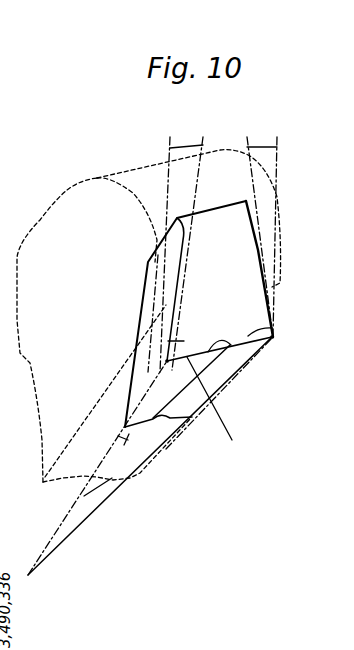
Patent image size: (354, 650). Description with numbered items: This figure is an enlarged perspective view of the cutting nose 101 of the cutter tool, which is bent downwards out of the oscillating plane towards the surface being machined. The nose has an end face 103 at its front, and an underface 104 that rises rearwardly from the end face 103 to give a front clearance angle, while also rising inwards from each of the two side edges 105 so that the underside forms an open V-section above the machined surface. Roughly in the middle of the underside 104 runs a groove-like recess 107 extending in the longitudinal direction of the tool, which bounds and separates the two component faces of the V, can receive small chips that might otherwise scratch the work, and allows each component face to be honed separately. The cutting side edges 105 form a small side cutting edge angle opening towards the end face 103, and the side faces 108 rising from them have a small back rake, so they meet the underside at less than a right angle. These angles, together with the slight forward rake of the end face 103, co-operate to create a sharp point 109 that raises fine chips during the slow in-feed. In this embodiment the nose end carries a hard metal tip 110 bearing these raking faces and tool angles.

The cutting nose 101 is at (117, 157).
The end face 103 is at (238, 277).
The underface 104 is at (203, 412).
The side edges 105 is at (143, 396).
The recess 107 is at (218, 336).
The side faces 108 is at (148, 360).
The sharp point 109 is at (167, 361).
The hard metal tip 110 is at (262, 243).